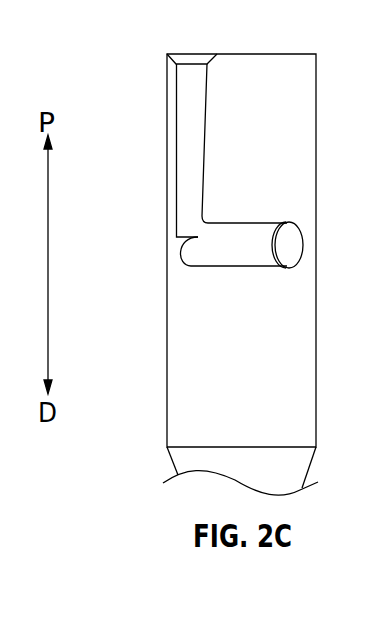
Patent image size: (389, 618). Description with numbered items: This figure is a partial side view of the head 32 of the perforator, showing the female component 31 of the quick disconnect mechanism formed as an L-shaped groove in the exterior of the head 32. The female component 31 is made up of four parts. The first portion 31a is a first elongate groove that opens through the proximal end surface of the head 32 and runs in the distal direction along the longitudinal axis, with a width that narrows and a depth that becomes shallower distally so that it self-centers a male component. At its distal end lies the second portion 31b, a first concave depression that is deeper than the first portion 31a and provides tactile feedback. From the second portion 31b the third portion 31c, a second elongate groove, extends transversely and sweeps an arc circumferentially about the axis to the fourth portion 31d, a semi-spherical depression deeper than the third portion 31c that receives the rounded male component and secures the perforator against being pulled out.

The female component 31 is at (163, 91).
The first portion 31a is at (188, 145).
The second portion 31b is at (190, 247).
The third portion 31c is at (237, 240).
The fourth portion 31d is at (292, 247).
The head 32 is at (130, 351).